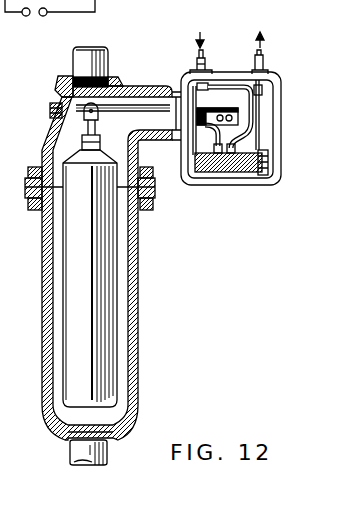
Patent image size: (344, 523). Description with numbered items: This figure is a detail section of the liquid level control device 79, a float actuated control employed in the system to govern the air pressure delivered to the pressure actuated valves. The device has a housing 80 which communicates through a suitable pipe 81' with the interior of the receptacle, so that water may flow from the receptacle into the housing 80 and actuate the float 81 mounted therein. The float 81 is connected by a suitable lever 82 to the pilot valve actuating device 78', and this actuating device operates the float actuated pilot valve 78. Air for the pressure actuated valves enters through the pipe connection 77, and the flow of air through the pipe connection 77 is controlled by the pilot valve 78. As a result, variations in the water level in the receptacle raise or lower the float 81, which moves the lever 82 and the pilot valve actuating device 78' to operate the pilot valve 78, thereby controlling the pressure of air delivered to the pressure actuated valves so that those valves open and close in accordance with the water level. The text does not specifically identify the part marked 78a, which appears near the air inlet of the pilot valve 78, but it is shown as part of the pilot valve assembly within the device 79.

The pipe connection 77 is at (266, 62).
The float actuated pilot valve 78 is at (257, 159).
The pilot valve actuating device 78' is at (220, 80).
The air inlet fitting 78a is at (197, 62).
The liquid level control device 79 is at (141, 308).
The housing 80 is at (138, 350).
The float 81 is at (129, 298).
The pipe 81' is at (65, 62).
The lever 82 is at (145, 113).